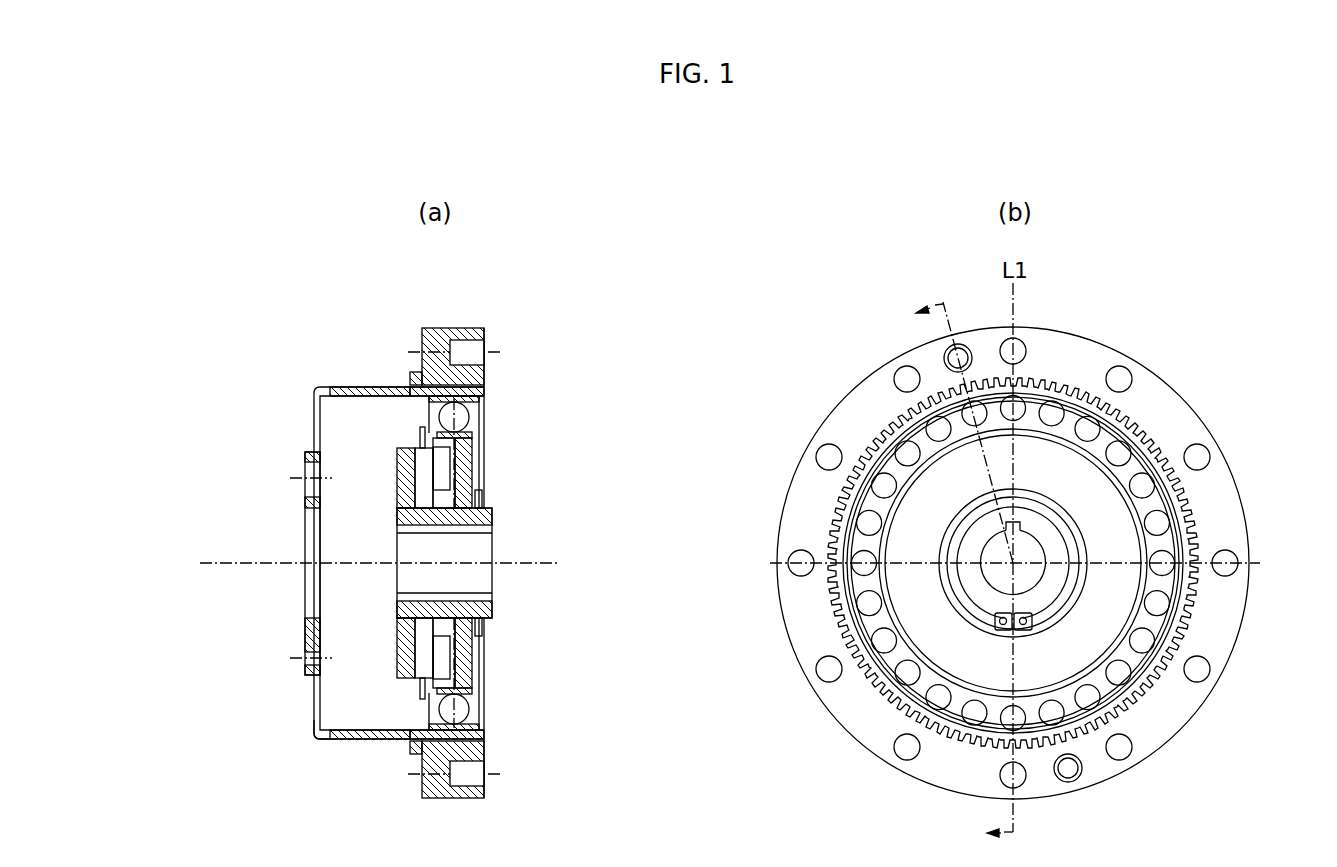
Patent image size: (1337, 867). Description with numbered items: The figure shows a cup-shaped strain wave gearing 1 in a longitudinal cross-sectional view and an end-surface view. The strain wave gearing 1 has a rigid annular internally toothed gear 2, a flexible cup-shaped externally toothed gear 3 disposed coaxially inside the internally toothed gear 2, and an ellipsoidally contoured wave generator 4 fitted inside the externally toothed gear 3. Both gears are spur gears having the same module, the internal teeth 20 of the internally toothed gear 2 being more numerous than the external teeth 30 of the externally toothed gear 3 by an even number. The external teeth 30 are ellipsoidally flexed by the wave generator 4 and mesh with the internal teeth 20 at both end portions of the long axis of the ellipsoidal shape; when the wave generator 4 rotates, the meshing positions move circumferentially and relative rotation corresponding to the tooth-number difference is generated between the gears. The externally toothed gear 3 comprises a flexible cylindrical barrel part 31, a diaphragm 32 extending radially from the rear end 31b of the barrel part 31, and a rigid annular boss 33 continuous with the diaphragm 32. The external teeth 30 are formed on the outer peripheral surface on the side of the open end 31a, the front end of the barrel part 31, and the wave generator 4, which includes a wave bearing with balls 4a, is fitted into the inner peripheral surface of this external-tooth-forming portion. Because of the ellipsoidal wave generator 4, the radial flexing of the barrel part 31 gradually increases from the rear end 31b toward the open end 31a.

The strain wave gearing 1 is at (303, 365).
The internally toothed gear 2 is at (494, 372).
The externally toothed gear 3 is at (494, 400).
The wave generator 4 is at (482, 470).
The balls 4a is at (480, 704).
The internal teeth 20 is at (413, 398).
The external teeth 30 is at (412, 380).
The cylindrical barrel part 31 is at (360, 740).
The open end 31a is at (487, 734).
The rear end 31b is at (318, 739).
The diaphragm 32 is at (313, 701).
The boss 33 is at (305, 623).